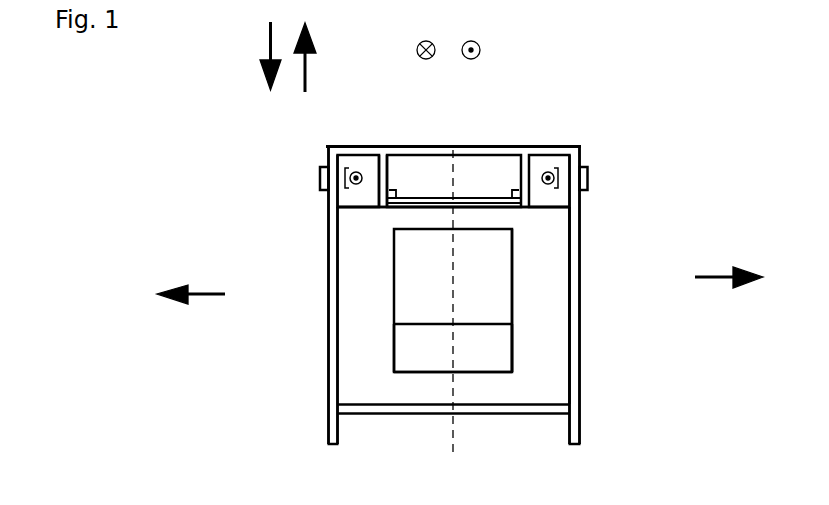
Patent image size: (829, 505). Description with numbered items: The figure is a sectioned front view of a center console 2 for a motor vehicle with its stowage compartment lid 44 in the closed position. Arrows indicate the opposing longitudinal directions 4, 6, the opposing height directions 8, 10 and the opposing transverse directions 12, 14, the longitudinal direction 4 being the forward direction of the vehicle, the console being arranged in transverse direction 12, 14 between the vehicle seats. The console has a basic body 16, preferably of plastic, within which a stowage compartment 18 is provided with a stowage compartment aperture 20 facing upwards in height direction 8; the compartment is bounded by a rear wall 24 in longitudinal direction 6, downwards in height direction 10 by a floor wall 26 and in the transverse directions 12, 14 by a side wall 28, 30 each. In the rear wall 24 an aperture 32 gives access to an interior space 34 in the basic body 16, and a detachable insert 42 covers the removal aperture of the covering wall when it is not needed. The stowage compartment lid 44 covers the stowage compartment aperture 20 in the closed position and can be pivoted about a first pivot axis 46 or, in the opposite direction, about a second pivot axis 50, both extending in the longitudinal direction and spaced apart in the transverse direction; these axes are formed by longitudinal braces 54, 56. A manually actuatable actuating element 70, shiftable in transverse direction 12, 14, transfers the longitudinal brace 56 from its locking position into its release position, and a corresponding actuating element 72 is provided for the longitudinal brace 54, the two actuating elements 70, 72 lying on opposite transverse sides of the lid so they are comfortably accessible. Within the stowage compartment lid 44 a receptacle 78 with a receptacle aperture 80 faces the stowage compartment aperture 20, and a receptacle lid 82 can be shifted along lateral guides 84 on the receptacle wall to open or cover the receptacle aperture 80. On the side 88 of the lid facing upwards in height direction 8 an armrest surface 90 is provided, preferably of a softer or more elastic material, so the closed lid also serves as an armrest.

The center console 2 is at (672, 122).
The longitudinal direction 4 is at (479, 44).
The longitudinal direction 6 is at (426, 41).
The height direction 8 is at (307, 70).
The height direction 10 is at (262, 41).
The transverse direction 12 is at (715, 275).
The transverse direction 14 is at (200, 293).
The basic body 16 is at (592, 367).
The stowage compartment 18 is at (555, 310).
The stowage compartment aperture 20 is at (370, 199).
The rear wall 24 is at (548, 243).
The floor wall 26 is at (403, 408).
The side wall 28 is at (573, 328).
The side wall 30 is at (333, 316).
The aperture 32 is at (527, 274).
The interior space 34 is at (436, 270).
The detachable insert 42 is at (500, 333).
The stowage compartment lid 44 is at (595, 128).
The first pivot axis 46 is at (347, 177).
The second pivot axis 50 is at (554, 178).
The longitudinal brace 54 is at (352, 181).
The longitudinal brace 56 is at (552, 182).
The actuating element 70 is at (586, 186).
The actuating element 72 is at (319, 182).
The receptacle 78 is at (500, 150).
The receptacle aperture 80 is at (410, 211).
The receptacle lid 82 is at (463, 198).
The lateral guides 84 is at (392, 194).
The side 88 is at (348, 143).
The armrest surface 90 is at (365, 130).